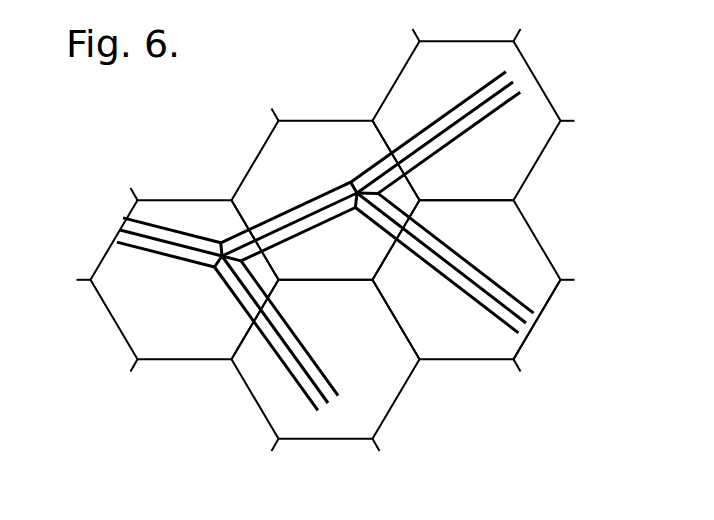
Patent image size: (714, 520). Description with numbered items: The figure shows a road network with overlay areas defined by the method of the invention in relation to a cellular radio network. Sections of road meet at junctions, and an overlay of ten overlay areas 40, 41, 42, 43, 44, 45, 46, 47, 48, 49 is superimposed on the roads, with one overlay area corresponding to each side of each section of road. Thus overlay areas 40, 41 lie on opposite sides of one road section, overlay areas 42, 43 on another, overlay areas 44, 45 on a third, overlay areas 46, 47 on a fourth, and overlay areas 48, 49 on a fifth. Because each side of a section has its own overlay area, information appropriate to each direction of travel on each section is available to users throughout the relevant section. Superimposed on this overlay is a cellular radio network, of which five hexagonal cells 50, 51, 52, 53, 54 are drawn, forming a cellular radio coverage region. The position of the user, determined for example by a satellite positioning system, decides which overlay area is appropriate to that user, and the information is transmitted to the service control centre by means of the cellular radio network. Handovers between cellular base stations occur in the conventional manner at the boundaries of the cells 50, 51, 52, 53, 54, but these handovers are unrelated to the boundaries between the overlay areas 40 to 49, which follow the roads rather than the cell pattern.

The overlay area 40 is at (452, 108).
The overlay area 41 is at (452, 143).
The overlay area 42 is at (470, 262).
The overlay area 43 is at (455, 290).
The overlay area 44 is at (322, 228).
The overlay area 45 is at (312, 200).
The overlay area 46 is at (296, 337).
The overlay area 47 is at (272, 354).
The overlay area 48 is at (172, 262).
The overlay area 49 is at (181, 233).
The cell 50 is at (514, 59).
The cell 51 is at (545, 293).
The cell 52 is at (380, 433).
The cell 53 is at (122, 240).
The cell 54 is at (303, 132).